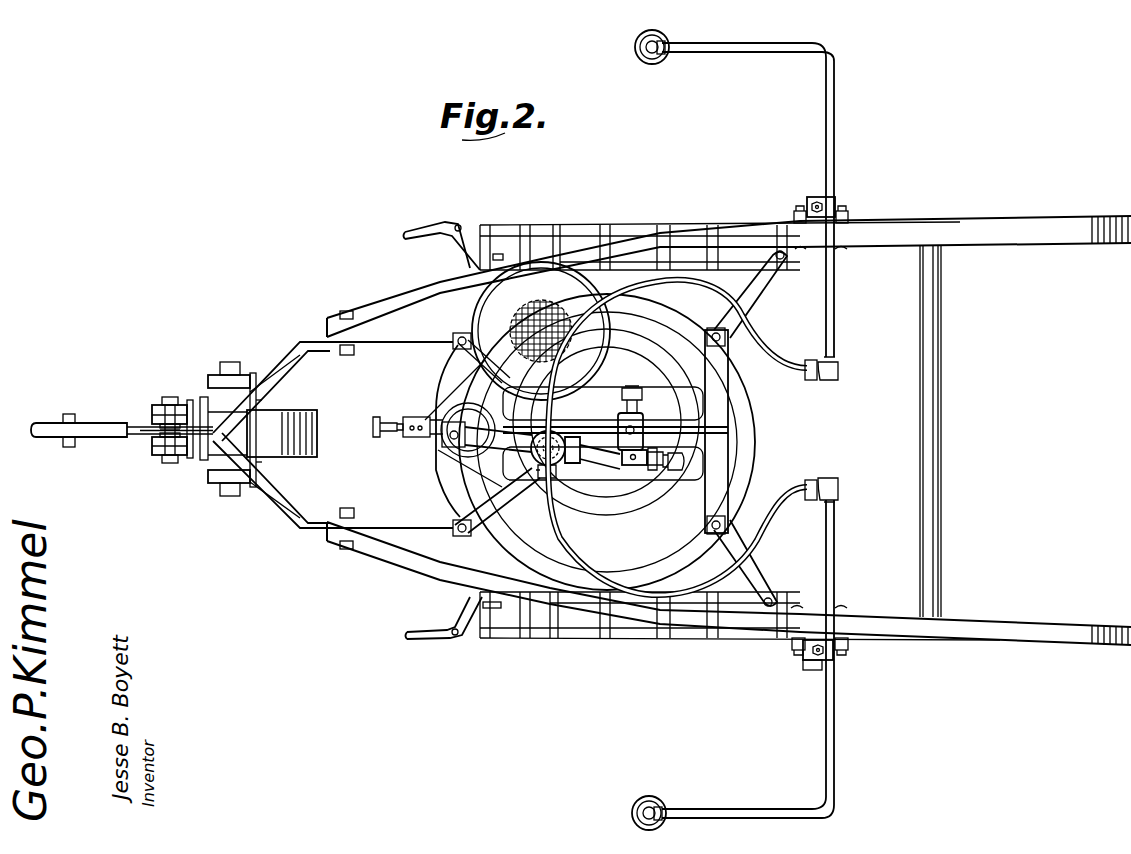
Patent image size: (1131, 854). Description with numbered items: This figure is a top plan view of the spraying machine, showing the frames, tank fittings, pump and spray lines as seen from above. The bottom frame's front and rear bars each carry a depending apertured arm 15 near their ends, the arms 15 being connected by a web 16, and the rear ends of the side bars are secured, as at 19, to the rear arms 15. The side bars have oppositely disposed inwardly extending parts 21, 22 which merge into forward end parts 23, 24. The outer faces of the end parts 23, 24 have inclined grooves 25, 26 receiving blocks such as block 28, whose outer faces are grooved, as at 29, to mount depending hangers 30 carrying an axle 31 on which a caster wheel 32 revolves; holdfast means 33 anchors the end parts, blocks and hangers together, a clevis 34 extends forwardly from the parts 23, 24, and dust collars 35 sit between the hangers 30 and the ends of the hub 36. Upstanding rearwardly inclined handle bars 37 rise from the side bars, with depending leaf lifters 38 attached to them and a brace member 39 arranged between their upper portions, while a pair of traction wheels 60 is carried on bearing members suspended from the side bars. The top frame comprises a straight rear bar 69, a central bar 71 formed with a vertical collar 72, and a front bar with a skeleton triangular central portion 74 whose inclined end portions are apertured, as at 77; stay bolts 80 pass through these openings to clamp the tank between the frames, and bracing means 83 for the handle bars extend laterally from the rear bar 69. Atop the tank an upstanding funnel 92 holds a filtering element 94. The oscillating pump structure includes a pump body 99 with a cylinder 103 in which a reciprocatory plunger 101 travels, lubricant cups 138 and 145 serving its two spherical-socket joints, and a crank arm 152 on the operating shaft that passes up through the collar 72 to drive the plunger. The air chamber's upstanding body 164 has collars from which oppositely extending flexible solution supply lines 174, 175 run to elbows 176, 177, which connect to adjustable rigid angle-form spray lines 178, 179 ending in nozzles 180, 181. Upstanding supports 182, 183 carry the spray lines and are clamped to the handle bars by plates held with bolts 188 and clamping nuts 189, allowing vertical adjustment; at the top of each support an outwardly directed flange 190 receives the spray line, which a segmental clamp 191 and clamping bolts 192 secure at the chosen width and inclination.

The depending apertured arm 15 is at (478, 514).
The web 16 is at (473, 371).
The securing point of side bars to rear arms 19 is at (607, 442).
The inwardly extending part 21 is at (285, 345).
The inwardly extending part 22 is at (296, 526).
The forward end part 23 is at (156, 410).
The forward end part 24 is at (152, 445).
The inclined groove 25 is at (180, 405).
The inclined groove 26 is at (190, 460).
The block 28 is at (158, 407).
The groove 29 is at (170, 452).
The depending hanger 30 is at (164, 400).
The axle 31 is at (231, 362).
The caster wheel 32 is at (298, 440).
The holdfast means 33 is at (169, 397).
The clevis 34 is at (52, 420).
The dust collar 35 is at (264, 393).
The hub 36 is at (262, 404).
The handle bar 37 is at (392, 308).
The leaf lifter 38 is at (428, 226).
The brace member 39 is at (943, 484).
The traction wheel 60 is at (633, 226).
The rear bar 69 is at (728, 383).
The central bar 71 is at (669, 427).
The collar 72 is at (619, 410).
The triangular shaped central portion 74 is at (448, 479).
The aperture 77 is at (453, 336).
The stay bolt 80 is at (726, 341).
The bracing means 83 is at (753, 288).
The funnel 92 is at (541, 261).
The filtering element 94 is at (553, 300).
The pump body 99 is at (518, 466).
The reciprocatory plunger 101 is at (607, 468).
The cylinder 103 is at (452, 417).
The lubricant cup 138 is at (680, 468).
The lubricant cup 145 is at (374, 420).
The crank arm 152 is at (645, 425).
The upstanding body 164 is at (560, 441).
The flexible solution supply line 174 is at (764, 344).
The flexible solution supply line 175 is at (773, 497).
The elbow 176 is at (838, 373).
The elbow 177 is at (840, 486).
The spray line 178 is at (835, 134).
The spray line 179 is at (835, 549).
The nozzle 180 is at (634, 47).
The nozzle 181 is at (645, 796).
The upstanding support 182 is at (806, 200).
The upstanding support 183 is at (803, 665).
The bolt 188 is at (845, 254).
The clamping nut 189 is at (845, 212).
The flange 190 is at (816, 197).
The segmental shaped clamp 191 is at (835, 660).
The clamping bolt 192 is at (800, 213).